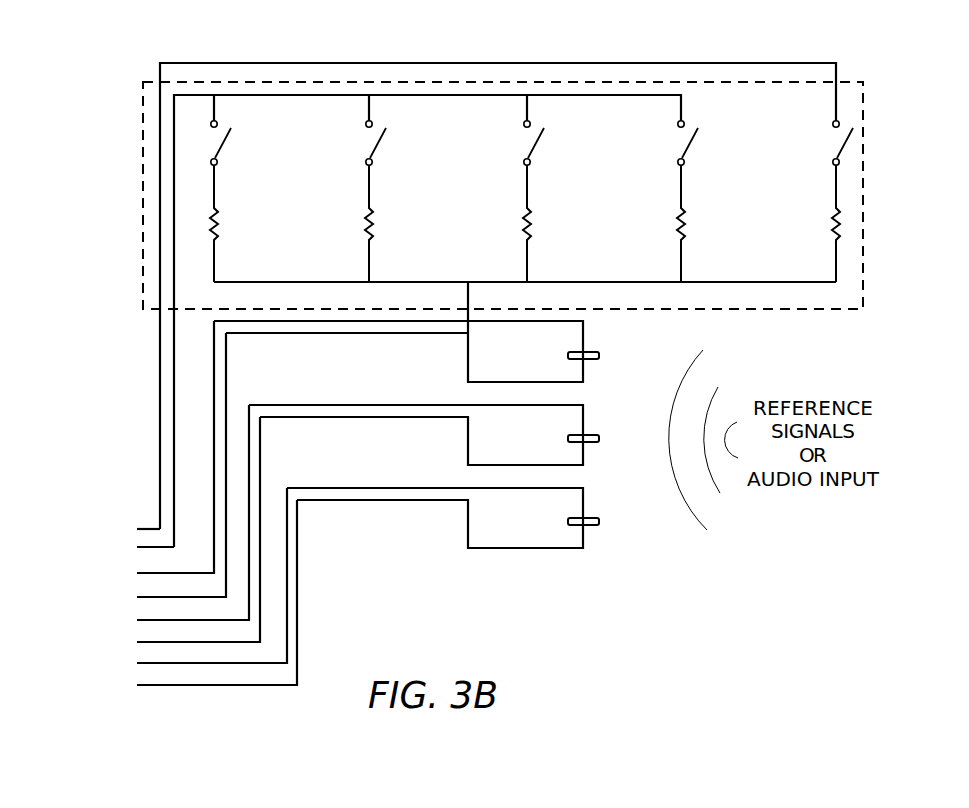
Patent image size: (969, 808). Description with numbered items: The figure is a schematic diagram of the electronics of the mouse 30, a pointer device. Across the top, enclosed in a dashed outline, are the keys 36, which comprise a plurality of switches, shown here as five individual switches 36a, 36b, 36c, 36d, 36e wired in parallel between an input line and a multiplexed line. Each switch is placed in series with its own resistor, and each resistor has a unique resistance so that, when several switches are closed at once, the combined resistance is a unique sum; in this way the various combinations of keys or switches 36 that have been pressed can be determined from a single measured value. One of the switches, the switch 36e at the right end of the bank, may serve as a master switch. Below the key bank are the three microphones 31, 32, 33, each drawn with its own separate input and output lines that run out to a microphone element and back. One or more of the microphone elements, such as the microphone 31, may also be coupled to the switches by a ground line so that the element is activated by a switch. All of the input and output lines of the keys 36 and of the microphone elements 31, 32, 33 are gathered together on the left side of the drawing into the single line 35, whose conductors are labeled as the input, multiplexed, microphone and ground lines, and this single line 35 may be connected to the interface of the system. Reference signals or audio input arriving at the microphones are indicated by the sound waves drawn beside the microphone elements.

The mouse 30 is at (137, 38).
The microphone 31 is at (592, 351).
The microphone 32 is at (592, 434).
The microphone 33 is at (592, 516).
The single line 35 is at (48, 510).
The keys 36 is at (767, 310).
The switch 36a is at (278, 154).
The switch 36b is at (431, 156).
The switch 36c is at (588, 156).
The switch 36d is at (721, 158).
The switch 36e is at (810, 163).